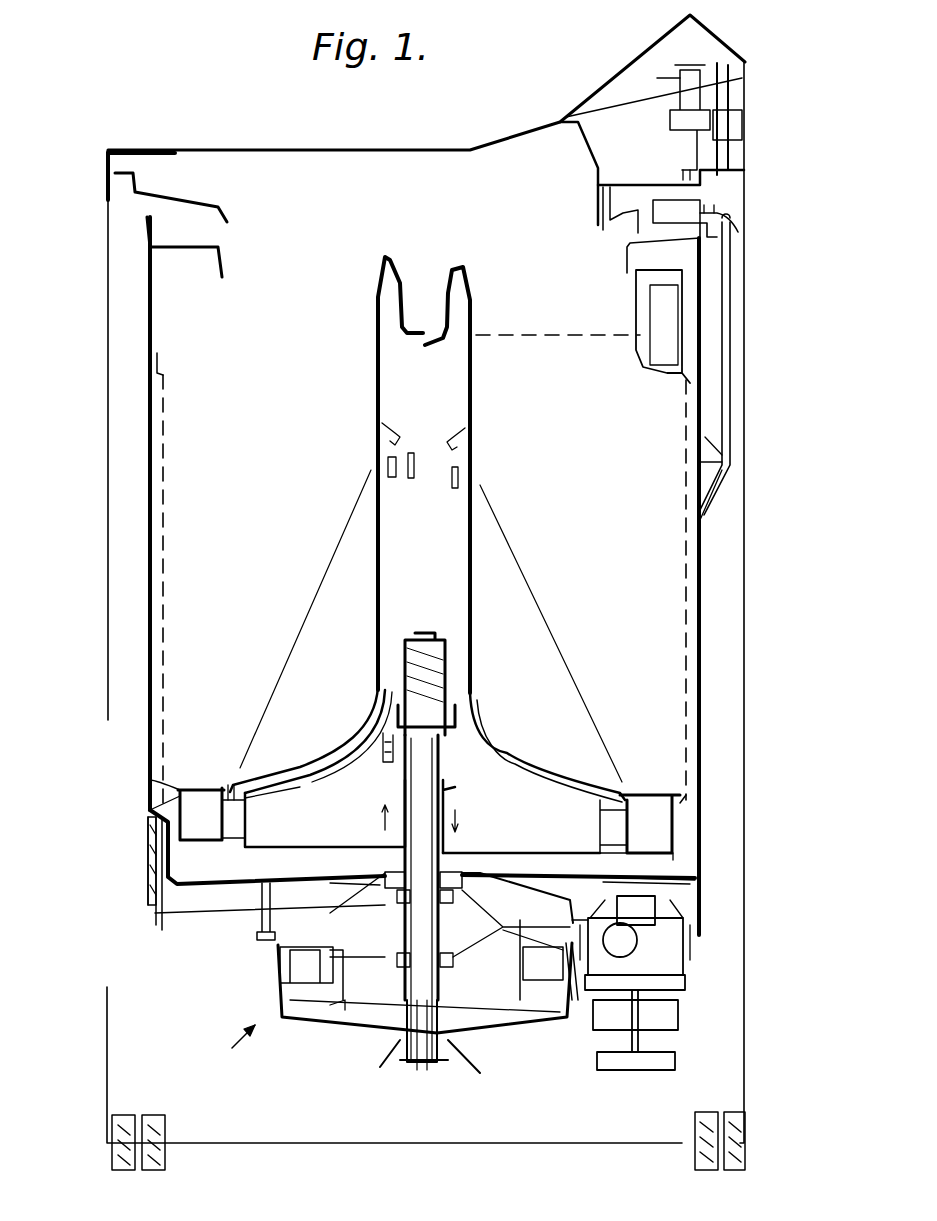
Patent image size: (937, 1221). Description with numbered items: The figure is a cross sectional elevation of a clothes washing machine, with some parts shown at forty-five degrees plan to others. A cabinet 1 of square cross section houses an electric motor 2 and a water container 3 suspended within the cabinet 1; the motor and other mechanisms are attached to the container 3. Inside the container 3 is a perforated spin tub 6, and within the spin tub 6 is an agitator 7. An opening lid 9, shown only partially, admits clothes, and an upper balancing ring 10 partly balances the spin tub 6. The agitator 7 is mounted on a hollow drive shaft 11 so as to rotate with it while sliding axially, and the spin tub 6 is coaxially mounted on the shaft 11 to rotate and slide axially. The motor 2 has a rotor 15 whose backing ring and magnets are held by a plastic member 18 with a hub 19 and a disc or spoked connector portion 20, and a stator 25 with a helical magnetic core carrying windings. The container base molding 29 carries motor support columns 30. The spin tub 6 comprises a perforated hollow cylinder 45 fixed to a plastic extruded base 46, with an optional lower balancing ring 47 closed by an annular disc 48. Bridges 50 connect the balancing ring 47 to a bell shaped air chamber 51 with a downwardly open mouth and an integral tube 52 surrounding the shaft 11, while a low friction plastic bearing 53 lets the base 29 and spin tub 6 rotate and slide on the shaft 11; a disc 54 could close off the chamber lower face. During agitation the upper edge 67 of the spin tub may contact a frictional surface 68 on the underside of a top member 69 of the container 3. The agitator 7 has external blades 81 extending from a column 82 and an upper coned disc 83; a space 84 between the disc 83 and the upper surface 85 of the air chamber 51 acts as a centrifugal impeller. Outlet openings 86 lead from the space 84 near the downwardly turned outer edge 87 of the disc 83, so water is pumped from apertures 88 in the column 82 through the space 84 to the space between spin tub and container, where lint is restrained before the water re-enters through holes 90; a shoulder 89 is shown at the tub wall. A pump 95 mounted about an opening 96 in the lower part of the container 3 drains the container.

The cabinet 1 is at (105, 430).
The electric motor 2 is at (234, 1053).
The water container 3 is at (150, 522).
The spin tub 6 is at (152, 592).
The agitator 7 is at (338, 556).
The opening lid 9 is at (108, 160).
The upper balancing ring 10 is at (668, 312).
The hollow drive shaft 11 is at (440, 843).
The rotor 15 is at (280, 1010).
The plastic member 18 is at (282, 960).
The hub 19 is at (440, 1020).
The disc or spoked connector portion 20 is at (395, 1045).
The stator 25 is at (340, 1005).
The container base molding 29 is at (160, 905).
The motor support columns 30 is at (262, 908).
The perforated hollow cylinder 45 is at (162, 680).
The plastic extruded base 46 is at (200, 785).
The lower balancing ring 47 is at (672, 822).
The annular disc 48 is at (627, 268).
The bridges 50 is at (620, 820).
The air chamber 51 is at (355, 815).
The tube 52 is at (448, 784).
The low friction plastic bearing 53 is at (445, 800).
The disc 54 is at (280, 848).
The upper edge 67 is at (722, 225).
The frictional surface 68 is at (705, 212).
The top member 69 is at (670, 192).
The external blades 81 is at (340, 647).
The column 82 is at (515, 557).
The upper coned disc 83 is at (265, 790).
The space 84 is at (310, 760).
The upper surface 85 is at (372, 745).
The outlet openings 86 is at (245, 797).
The outer edge 87 is at (230, 788).
The apertures 88 is at (378, 325).
The tub shoulder 89 is at (165, 782).
The holes 90 is at (160, 480).
The pump 95 is at (678, 1015).
The opening 96 is at (660, 903).